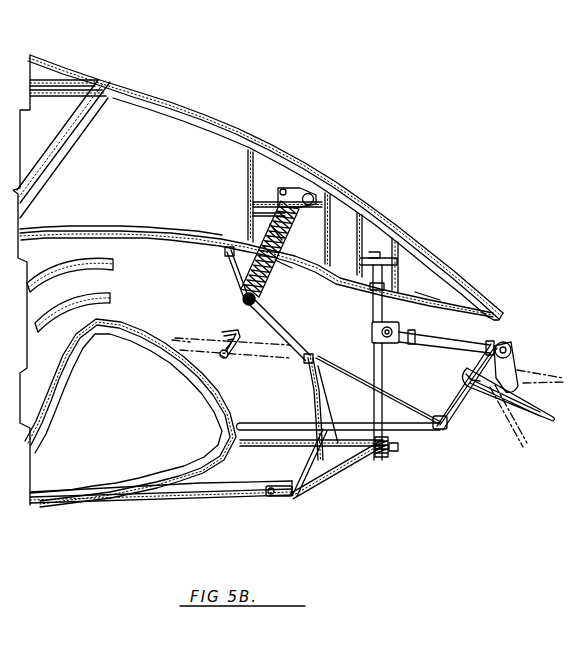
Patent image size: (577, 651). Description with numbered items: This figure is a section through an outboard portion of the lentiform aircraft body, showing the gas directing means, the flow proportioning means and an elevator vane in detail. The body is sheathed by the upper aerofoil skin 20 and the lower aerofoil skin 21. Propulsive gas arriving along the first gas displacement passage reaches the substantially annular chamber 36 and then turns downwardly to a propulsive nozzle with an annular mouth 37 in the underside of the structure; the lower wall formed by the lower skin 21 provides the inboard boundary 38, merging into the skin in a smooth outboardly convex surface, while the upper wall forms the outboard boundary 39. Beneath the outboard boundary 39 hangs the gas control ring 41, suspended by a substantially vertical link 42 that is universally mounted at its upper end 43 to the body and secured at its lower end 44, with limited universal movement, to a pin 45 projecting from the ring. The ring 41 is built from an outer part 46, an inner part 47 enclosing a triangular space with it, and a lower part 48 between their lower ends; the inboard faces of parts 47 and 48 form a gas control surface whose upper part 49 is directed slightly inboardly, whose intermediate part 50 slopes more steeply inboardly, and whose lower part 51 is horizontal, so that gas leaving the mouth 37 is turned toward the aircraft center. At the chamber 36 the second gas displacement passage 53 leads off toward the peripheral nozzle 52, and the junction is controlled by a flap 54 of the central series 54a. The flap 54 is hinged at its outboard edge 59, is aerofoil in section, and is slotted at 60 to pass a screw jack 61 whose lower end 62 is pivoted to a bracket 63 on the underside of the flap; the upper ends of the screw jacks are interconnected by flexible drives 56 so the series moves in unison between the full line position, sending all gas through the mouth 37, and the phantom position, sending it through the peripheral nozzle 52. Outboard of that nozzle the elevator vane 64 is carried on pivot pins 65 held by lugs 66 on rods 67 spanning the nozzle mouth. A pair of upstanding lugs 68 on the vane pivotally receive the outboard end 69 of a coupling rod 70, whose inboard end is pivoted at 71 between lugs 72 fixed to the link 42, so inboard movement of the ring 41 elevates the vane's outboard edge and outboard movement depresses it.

The upper aerofoil skin 20 is at (265, 187).
The lower aerofoil skin 21 is at (97, 497).
The annular chamber 36 is at (256, 262).
The annular mouth 37 is at (336, 404).
The inboard boundary of the mouth 38 is at (130, 436).
The outboard boundary of the mouth 39 is at (296, 409).
The gas control ring 41 is at (336, 441).
The suspension link 42 is at (380, 377).
The upper end of link 43 is at (392, 251).
The lower end of link 44 is at (382, 429).
The pin 45 is at (408, 479).
The outer part of ring 46 is at (338, 497).
The inner part of ring 47 is at (310, 491).
The lower part of ring 48 is at (275, 517).
The upper part of gas control surface 49 is at (311, 450).
The intermediate part of gas control surface 50 is at (279, 478).
The lower part of gas control surface 51 is at (250, 521).
The peripheral nozzle 52 is at (446, 290).
The second gas displacement passage 53 is at (332, 214).
The flap 54 is at (207, 247).
The central series flap 54a is at (231, 307).
The flexible drive 56 is at (292, 217).
The hinge 59 is at (290, 378).
The slot 60 is at (290, 321).
The screw jack 61 is at (244, 215).
The lower end of screw jack 62 is at (214, 293).
The bracket 63 is at (266, 340).
The elevator vane 64 is at (514, 387).
The pivot pin 65 is at (505, 445).
The lug 66 is at (483, 444).
The rod 67 is at (467, 429).
The upstanding lug 68 is at (519, 347).
The outboard end of coupling rod 69 is at (509, 317).
The coupling rod 70 is at (470, 339).
The pivotal connection 71 is at (355, 323).
The lug 72 is at (435, 259).